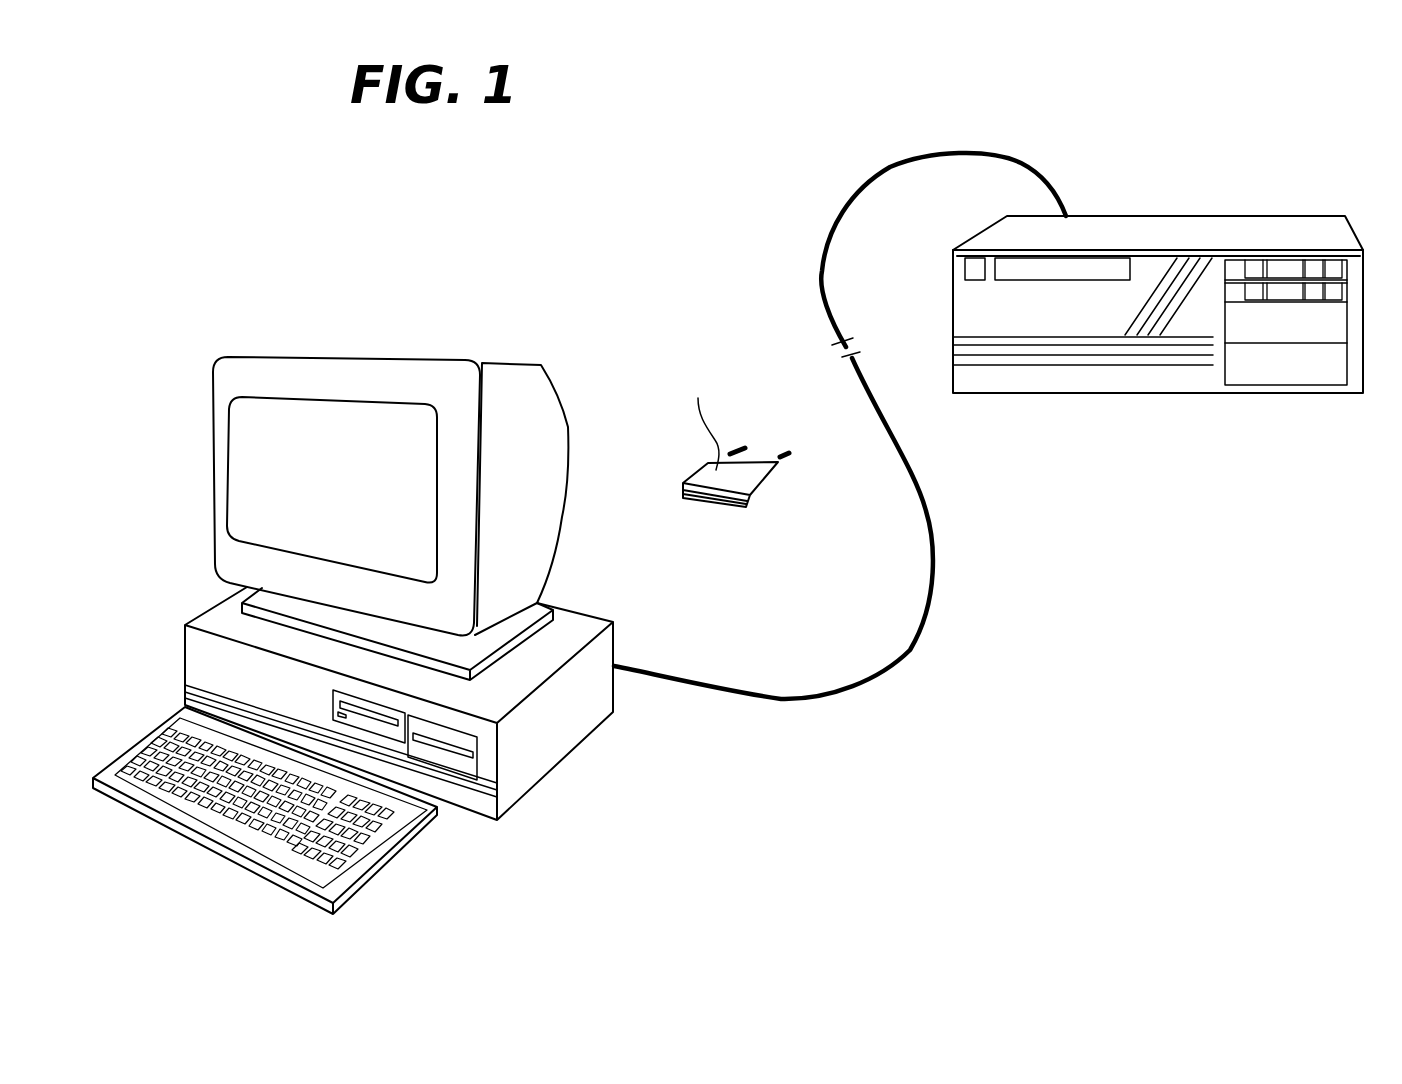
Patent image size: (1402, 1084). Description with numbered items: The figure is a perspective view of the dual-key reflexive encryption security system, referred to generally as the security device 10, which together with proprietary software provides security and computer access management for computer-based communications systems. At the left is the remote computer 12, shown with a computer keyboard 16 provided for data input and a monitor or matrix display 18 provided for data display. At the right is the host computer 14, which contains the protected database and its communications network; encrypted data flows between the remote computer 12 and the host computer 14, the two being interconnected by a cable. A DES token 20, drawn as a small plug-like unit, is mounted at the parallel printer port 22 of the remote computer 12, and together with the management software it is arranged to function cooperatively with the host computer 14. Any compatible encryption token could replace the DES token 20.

The security device 10 is at (353, 594).
The remote computer 12 is at (390, 450).
The host computer 14 is at (1228, 217).
The computer keyboard 16 is at (392, 862).
The monitor or matrix display 18 is at (362, 427).
The DES token 20 is at (773, 477).
The parallel printer port 22 is at (615, 683).